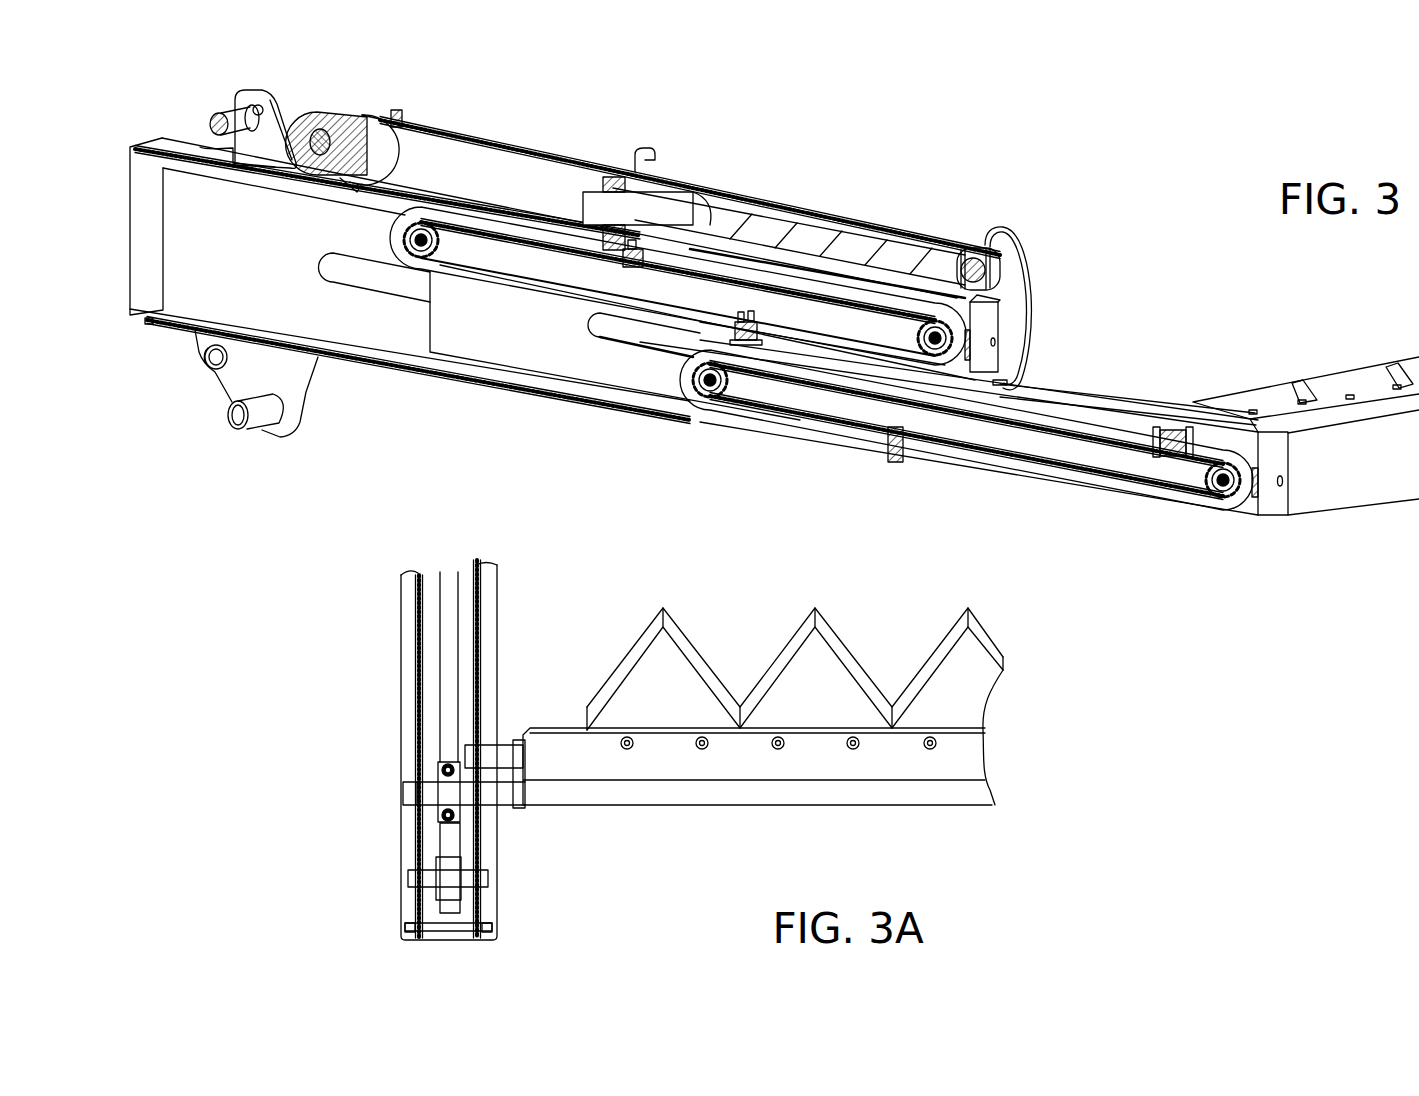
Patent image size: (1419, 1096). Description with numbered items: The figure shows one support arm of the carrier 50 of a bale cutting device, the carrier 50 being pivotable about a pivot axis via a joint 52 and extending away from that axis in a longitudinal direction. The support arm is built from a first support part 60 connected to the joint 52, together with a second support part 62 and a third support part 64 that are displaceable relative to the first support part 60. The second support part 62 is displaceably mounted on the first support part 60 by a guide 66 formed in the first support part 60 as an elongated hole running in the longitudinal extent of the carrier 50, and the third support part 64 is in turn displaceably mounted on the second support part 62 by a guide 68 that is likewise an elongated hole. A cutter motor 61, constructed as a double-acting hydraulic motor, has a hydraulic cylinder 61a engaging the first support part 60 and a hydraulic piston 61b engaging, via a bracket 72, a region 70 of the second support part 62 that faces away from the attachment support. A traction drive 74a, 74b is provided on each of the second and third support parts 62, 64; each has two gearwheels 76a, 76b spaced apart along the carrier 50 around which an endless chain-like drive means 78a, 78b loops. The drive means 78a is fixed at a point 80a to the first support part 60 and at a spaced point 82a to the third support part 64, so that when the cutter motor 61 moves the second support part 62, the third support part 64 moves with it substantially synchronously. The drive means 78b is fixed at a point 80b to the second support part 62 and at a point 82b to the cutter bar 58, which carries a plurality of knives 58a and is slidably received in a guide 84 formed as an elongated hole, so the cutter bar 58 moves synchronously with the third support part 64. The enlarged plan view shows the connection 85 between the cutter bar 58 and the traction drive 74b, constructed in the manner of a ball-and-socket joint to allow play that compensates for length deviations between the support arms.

In FIG. 3, the carrier 50 is at (1047, 160).
In FIG. 3, the joint 52 is at (218, 418).
In FIG. 3, the cutter bar 58 is at (1360, 413).
In FIG. 3A, the cutter bar 58 is at (797, 793).
In FIG. 3, the knives 58a is at (980, 620).
In FIG. 3A, the knives 58a is at (838, 636).
In FIG. 3, the first support part 60 is at (233, 262).
In FIG. 3, the cutter motor 61 is at (530, 138).
In FIG. 3, the hydraulic cylinder 61a is at (447, 128).
In FIG. 3, the hydraulic piston 61b is at (790, 210).
In FIG. 3, the second support part 62 is at (503, 345).
In FIG. 3, the third support part 64 is at (1140, 488).
In FIG. 3A, the third support part 64 is at (408, 835).
In FIG. 3, the guide 66 is at (352, 287).
In FIG. 3, the guide 68 is at (645, 345).
In FIG. 3, the region 70 is at (1102, 225).
In FIG. 3A, the region 70 is at (430, 897).
In FIG. 3, the bracket 72 is at (1003, 320).
In FIG. 3, the traction drive 74a is at (517, 288).
In FIG. 3, the traction drive 74b is at (831, 420).
In FIG. 3, the gearwheel 76a is at (410, 235).
In FIG. 3, the gearwheel 76b is at (727, 410).
In FIG. 3, the drive means 78a is at (570, 290).
In FIG. 3, the drive means 78b is at (1052, 447).
In FIG. 3A, the drive means 78b is at (447, 842).
In FIG. 3, the point 80a is at (627, 259).
In FIG. 3, the point 80b is at (898, 460).
In FIG. 3, the point 82a is at (747, 345).
In FIG. 3, the point 82b is at (1170, 428).
In FIG. 3, the guide 84 is at (1090, 413).
In FIG. 3A, the connection 85 is at (430, 791).